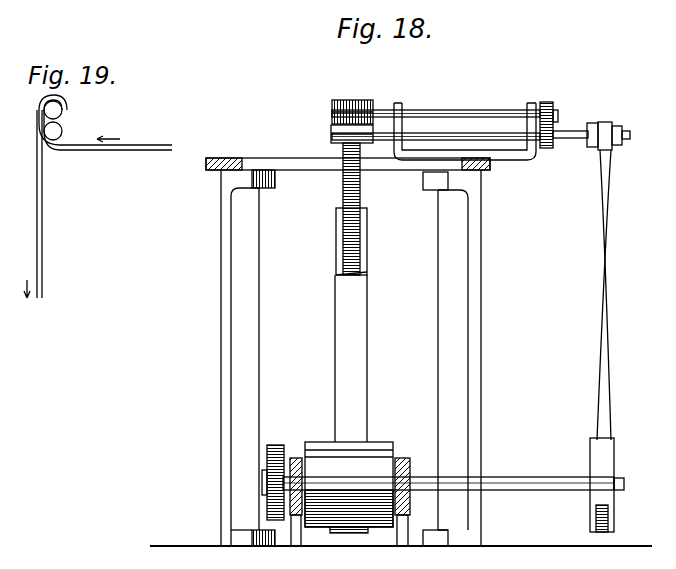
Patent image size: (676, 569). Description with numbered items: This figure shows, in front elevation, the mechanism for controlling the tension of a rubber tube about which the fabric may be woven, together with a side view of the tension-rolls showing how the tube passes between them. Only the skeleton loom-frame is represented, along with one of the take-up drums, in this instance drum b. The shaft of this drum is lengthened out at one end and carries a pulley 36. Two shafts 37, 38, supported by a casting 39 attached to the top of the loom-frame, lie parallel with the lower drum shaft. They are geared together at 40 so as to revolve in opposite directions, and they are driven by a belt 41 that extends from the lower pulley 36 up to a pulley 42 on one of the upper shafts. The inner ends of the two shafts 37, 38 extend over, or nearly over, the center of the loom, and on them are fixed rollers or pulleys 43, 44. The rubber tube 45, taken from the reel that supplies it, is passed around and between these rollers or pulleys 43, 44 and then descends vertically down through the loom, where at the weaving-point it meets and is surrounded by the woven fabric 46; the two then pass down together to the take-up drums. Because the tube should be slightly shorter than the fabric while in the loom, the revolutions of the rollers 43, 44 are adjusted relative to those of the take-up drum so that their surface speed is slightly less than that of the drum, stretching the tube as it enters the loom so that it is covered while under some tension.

In FIG. 18, the pulley 36 is at (614, 458).
In FIG. 18, the shaft 37 is at (448, 131).
In FIG. 18, the shaft 38 is at (466, 119).
In FIG. 18, the casting 39 is at (527, 163).
In FIG. 18, the gearing 40 is at (561, 125).
In FIG. 18, the belt 41 is at (618, 295).
In FIG. 18, the pulley 42 is at (618, 128).
In FIG. 18, the roller or pulley 43 is at (338, 108).
In FIG. 19, the roller or pulley 43 is at (62, 110).
In FIG. 18, the roller or pulley 44 is at (331, 134).
In FIG. 19, the roller or pulley 44 is at (62, 131).
In FIG. 18, the rubber tube 45 is at (360, 190).
In FIG. 19, the rubber tube 45 is at (43, 230).
In FIG. 18, the woven fabric 46 is at (343, 311).
In FIG. 18, the take-up drum b is at (370, 476).